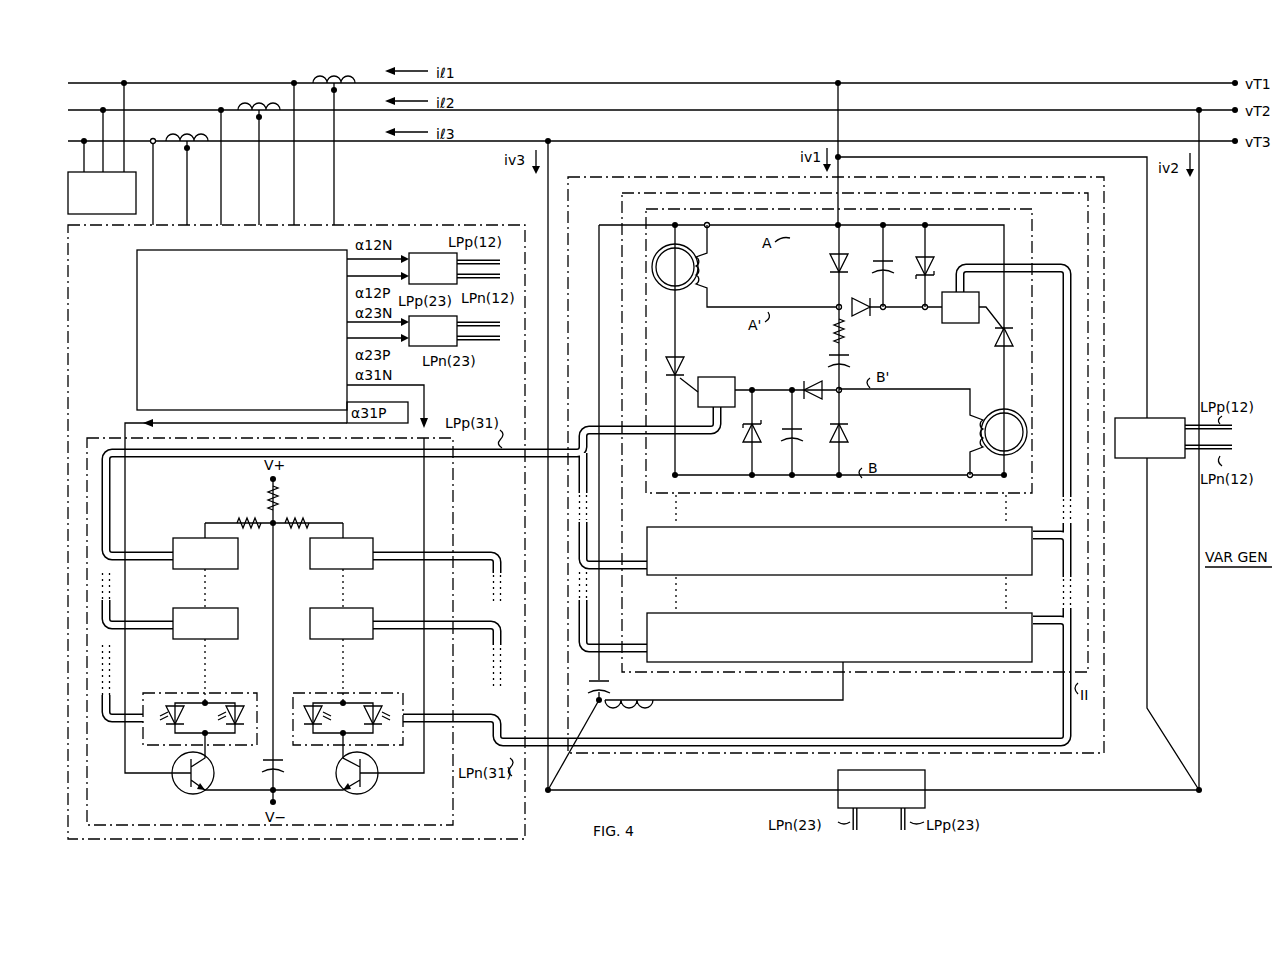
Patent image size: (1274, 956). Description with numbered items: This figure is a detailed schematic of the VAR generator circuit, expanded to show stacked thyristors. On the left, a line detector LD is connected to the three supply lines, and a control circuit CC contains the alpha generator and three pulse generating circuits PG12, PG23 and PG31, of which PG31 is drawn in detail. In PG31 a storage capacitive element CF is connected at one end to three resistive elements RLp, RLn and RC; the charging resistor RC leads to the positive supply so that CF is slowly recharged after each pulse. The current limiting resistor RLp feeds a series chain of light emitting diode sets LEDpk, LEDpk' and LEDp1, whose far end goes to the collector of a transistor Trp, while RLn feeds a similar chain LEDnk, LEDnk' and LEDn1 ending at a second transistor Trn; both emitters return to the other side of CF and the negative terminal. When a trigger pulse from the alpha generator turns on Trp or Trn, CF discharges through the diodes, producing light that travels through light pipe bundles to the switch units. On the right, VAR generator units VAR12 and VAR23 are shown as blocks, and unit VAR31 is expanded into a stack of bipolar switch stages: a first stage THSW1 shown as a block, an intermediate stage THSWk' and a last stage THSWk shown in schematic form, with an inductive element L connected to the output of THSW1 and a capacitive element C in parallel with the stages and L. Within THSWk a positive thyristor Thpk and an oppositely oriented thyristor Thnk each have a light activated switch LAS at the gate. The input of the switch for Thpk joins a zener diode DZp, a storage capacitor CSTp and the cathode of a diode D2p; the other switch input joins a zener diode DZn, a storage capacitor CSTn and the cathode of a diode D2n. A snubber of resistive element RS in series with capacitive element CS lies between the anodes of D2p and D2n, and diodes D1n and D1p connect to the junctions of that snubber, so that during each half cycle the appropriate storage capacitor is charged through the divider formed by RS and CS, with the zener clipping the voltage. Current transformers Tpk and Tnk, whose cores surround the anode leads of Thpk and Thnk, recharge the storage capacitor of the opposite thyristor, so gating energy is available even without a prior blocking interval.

The line detector LD is at (102, 193).
The control circuit CC is at (490, 228).
The pulse generating circuit PG12 is at (433, 268).
The pulse generating circuit PG23 is at (433, 331).
The pulse generating circuit PG31 is at (112, 432).
The charging resistor RC is at (283, 502).
The current limiting resistor RLp is at (238, 514).
The current limiting resistor RLn is at (306, 520).
The light emitting diode set LEDp1 is at (205, 553).
The light emitting diode set LEDn1 is at (341, 553).
The light emitting diode parallel combination LEDpk' is at (205, 623).
The light emitting diode parallel combination LEDnk' is at (341, 623).
The light emitting diode set LEDpk is at (193, 711).
The light emitting diode parallel combination LEDnk is at (348, 711).
The storage capacitive element CF is at (286, 770).
The transistor Trp is at (178, 791).
The second transistor Trn is at (374, 791).
The VAR generator unit VAR31 is at (1098, 762).
The bipolar switch stage THSWk is at (855, 432).
The intermediate switch stage THSWk' is at (839, 551).
The first switch stage THSW1 is at (839, 637).
The capacitive element C is at (616, 686).
The inductive element L is at (648, 702).
The current transformer Tpk is at (682, 292).
The positive thyristor Thpk is at (688, 370).
The light activated switch LAS is at (838, 349).
The diode D2p is at (812, 382).
The zener diode DZp is at (738, 442).
The storage capacitor CSTp is at (810, 438).
The diode D1n is at (848, 438).
The diode D1p is at (822, 262).
The resistive element RS is at (828, 336).
The capacitive element CS is at (850, 360).
The diode D2n is at (870, 316).
The storage capacitor CSTn is at (860, 262).
The zener diode DZn is at (934, 264).
The oppositely oriented thyristor Thnk is at (994, 336).
The current transformer Tnk is at (988, 414).
The VAR generator unit VAR12 is at (1150, 438).
The VAR generator unit VAR23 is at (881, 789).